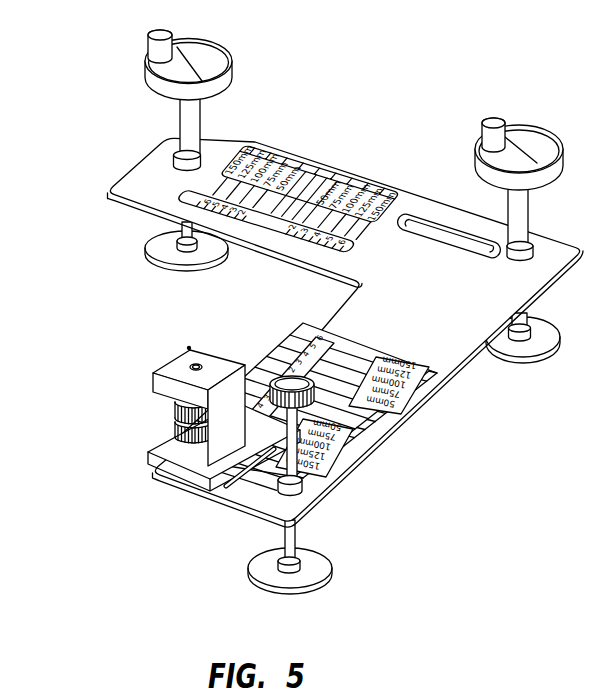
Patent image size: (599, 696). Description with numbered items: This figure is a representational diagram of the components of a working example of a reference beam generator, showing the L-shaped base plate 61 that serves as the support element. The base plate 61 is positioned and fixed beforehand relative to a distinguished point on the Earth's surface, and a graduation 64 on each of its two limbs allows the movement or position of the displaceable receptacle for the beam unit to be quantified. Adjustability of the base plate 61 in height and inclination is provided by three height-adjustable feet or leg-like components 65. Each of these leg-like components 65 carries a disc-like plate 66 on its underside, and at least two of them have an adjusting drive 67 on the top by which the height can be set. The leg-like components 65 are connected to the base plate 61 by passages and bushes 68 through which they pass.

The L-shaped base plate 61 is at (341, 303).
The graduation 64 is at (285, 350).
The height-adjustable feet or leg-like components 65 is at (287, 540).
The disc-like plates 66 is at (322, 563).
The adjusting drive 67 is at (214, 50).
The passages and bushes 68 is at (174, 161).